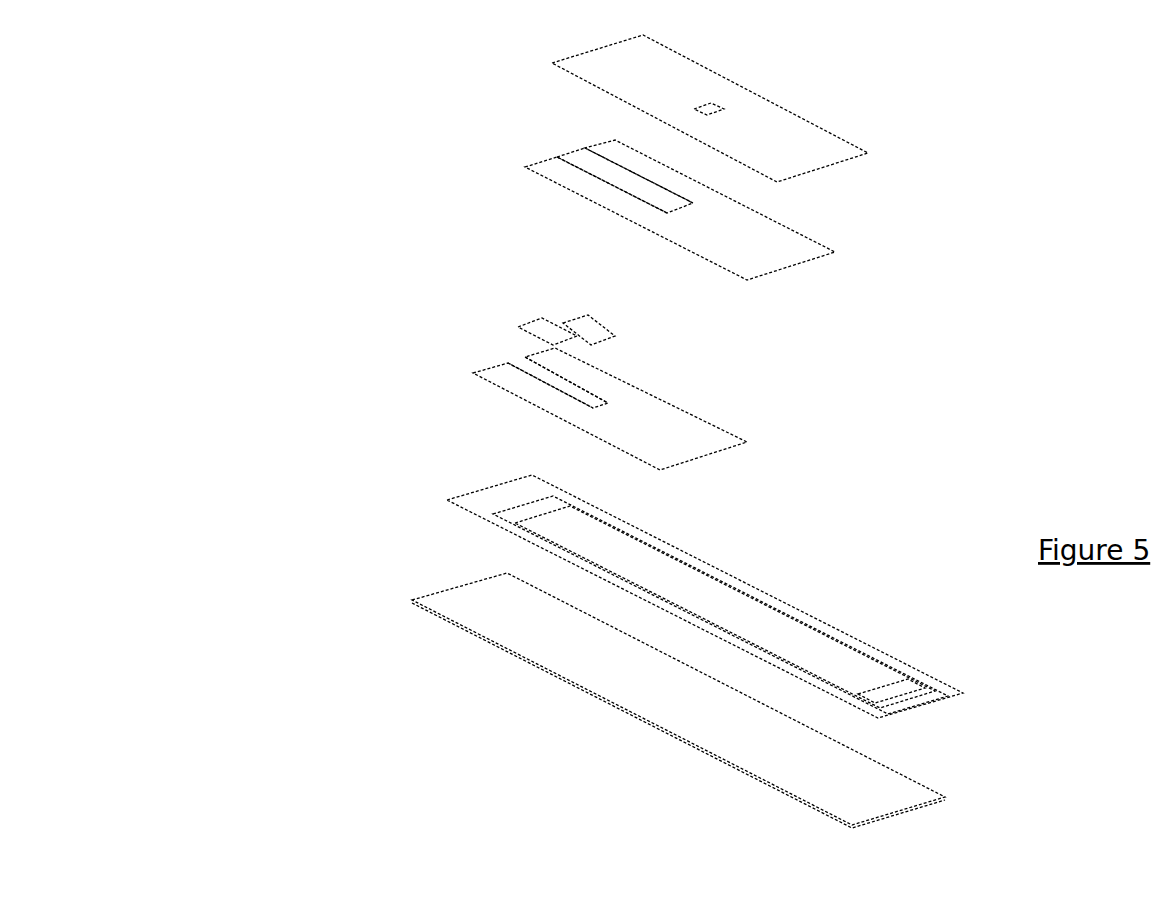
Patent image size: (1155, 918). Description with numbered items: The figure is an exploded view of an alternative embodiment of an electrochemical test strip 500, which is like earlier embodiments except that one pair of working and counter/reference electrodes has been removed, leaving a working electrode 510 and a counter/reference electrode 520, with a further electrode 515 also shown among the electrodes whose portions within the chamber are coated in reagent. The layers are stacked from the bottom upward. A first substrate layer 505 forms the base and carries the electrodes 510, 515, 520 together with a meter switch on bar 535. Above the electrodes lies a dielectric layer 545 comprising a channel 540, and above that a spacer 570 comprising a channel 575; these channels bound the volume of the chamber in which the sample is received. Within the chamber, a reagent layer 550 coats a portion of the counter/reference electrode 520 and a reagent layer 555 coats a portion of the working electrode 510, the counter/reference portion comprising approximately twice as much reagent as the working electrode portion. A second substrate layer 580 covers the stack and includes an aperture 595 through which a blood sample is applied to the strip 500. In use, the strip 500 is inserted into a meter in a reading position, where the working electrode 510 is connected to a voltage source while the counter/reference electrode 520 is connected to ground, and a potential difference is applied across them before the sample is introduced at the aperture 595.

The test strip 500 is at (260, 667).
The first substrate layer 505 is at (633, 690).
The working electrode 510 is at (500, 518).
The electrode 515 is at (548, 522).
The counter/reference electrode 520 is at (530, 483).
The meter switch on bar 535 is at (912, 700).
The channel 540 is at (575, 388).
The dielectric layer 545 is at (665, 442).
The reagent layer 550 is at (545, 328).
The reagent layer 555 is at (598, 330).
The spacer 570 is at (768, 258).
The channel 575 is at (630, 185).
The second substrate layer 580 is at (628, 80).
The aperture 595 is at (568, 150).